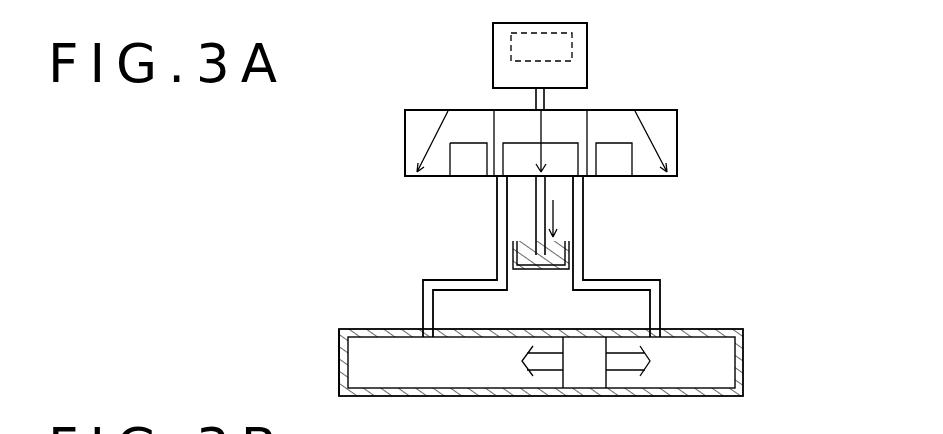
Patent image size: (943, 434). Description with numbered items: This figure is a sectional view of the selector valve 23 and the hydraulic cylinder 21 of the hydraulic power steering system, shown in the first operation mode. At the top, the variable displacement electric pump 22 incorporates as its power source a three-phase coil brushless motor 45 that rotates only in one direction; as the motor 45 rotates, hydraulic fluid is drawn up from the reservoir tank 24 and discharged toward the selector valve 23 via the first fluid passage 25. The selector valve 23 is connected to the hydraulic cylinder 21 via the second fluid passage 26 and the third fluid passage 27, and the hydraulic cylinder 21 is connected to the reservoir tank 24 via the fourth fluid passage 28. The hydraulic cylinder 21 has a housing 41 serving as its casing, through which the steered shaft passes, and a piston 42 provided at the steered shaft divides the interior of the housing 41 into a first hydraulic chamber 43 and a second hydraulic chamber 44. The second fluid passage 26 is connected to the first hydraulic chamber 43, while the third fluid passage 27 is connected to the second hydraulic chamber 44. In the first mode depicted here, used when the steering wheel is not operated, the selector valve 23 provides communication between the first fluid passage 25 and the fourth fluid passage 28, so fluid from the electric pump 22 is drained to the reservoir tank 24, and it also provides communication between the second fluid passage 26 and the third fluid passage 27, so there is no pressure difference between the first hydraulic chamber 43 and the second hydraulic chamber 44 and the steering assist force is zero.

The hydraulic cylinder 21 is at (744, 345).
The variable displacement electric pump 22 is at (587, 62).
The selector valve 23 is at (678, 138).
The reservoir tank 24 is at (541, 271).
The first fluid passage 25 is at (546, 98).
The second fluid passage 26 is at (584, 228).
The third fluid passage 27 is at (497, 229).
The fourth fluid passage 28 is at (535, 190).
The housing 41 is at (339, 356).
The piston 42 is at (583, 379).
The first hydraulic chamber 43 is at (676, 379).
The second hydraulic chamber 44 is at (437, 379).
The motor 45 is at (572, 38).